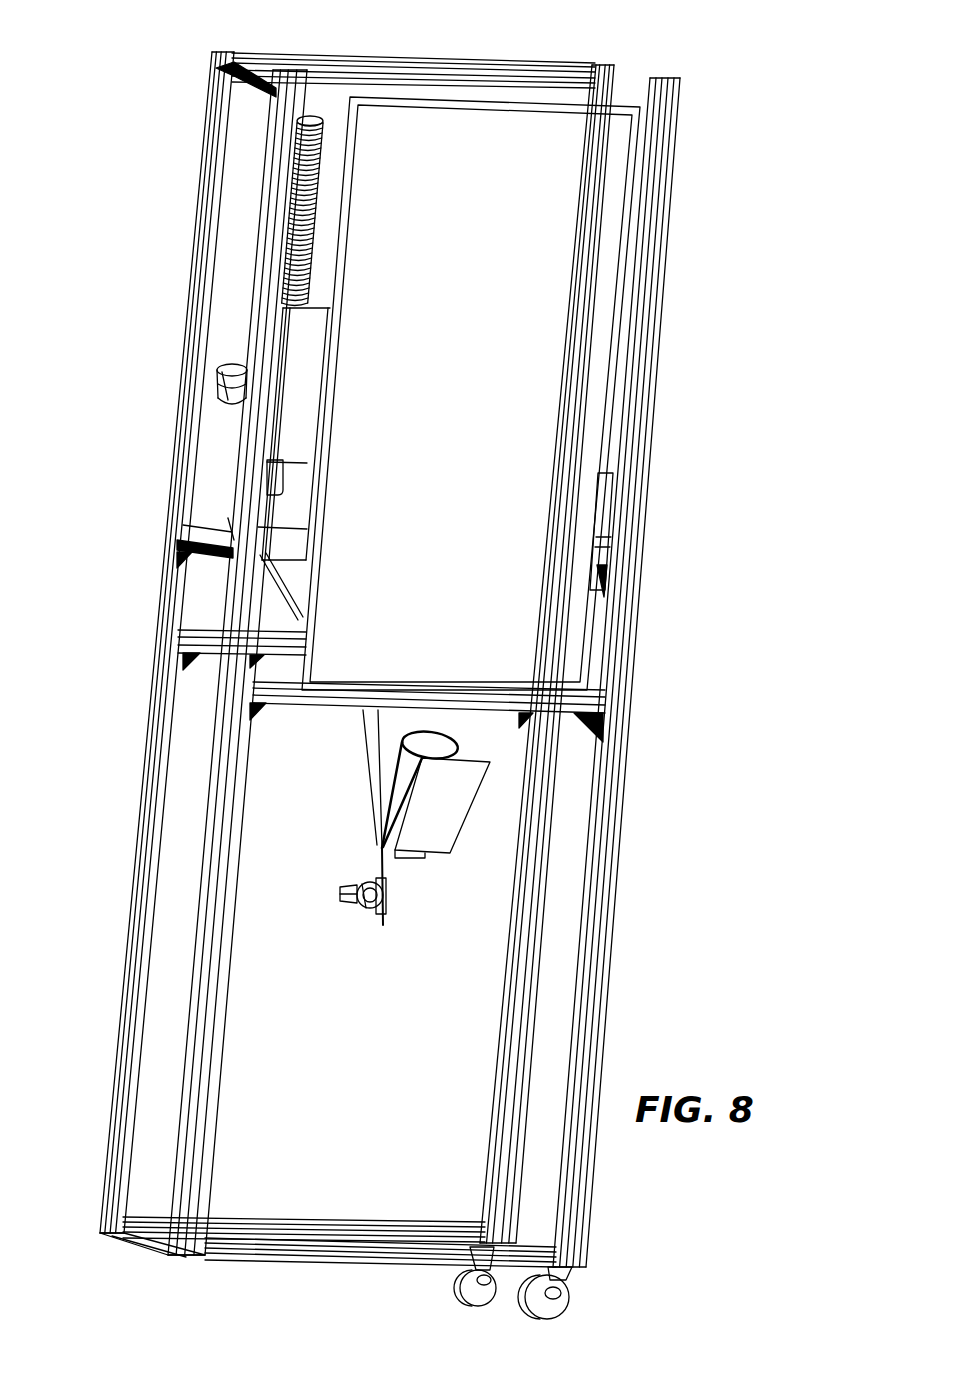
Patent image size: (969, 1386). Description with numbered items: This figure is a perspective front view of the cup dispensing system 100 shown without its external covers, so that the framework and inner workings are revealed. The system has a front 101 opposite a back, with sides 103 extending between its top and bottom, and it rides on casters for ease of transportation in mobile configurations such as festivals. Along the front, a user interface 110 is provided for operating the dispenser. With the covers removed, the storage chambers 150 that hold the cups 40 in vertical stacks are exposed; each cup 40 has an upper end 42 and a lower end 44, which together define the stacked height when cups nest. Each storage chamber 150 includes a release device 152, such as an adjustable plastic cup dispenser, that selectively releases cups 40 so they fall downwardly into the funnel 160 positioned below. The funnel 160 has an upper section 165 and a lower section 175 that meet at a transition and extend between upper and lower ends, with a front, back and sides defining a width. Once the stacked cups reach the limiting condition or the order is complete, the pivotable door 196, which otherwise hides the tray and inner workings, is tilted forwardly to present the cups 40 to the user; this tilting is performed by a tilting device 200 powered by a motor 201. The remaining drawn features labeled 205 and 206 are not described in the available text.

The cup dispensing system 100 is at (433, 665).
The front 101 is at (322, 112).
The sides 103 is at (262, 105).
The user interface 110 is at (545, 272).
The storage chambers 150 is at (240, 250).
The release device 152 is at (228, 400).
The funnel 160 is at (222, 514).
The upper section 165 is at (250, 578).
The lower section 175 is at (394, 723).
The hopper 205 is at (325, 777).
The cup 40 is at (396, 778).
The upper end 42 is at (392, 749).
The lower end 44 is at (385, 822).
The door 196 is at (543, 837).
The plate notch 206 is at (418, 866).
The tilting device 200 is at (370, 927).
The motor 201 is at (356, 906).